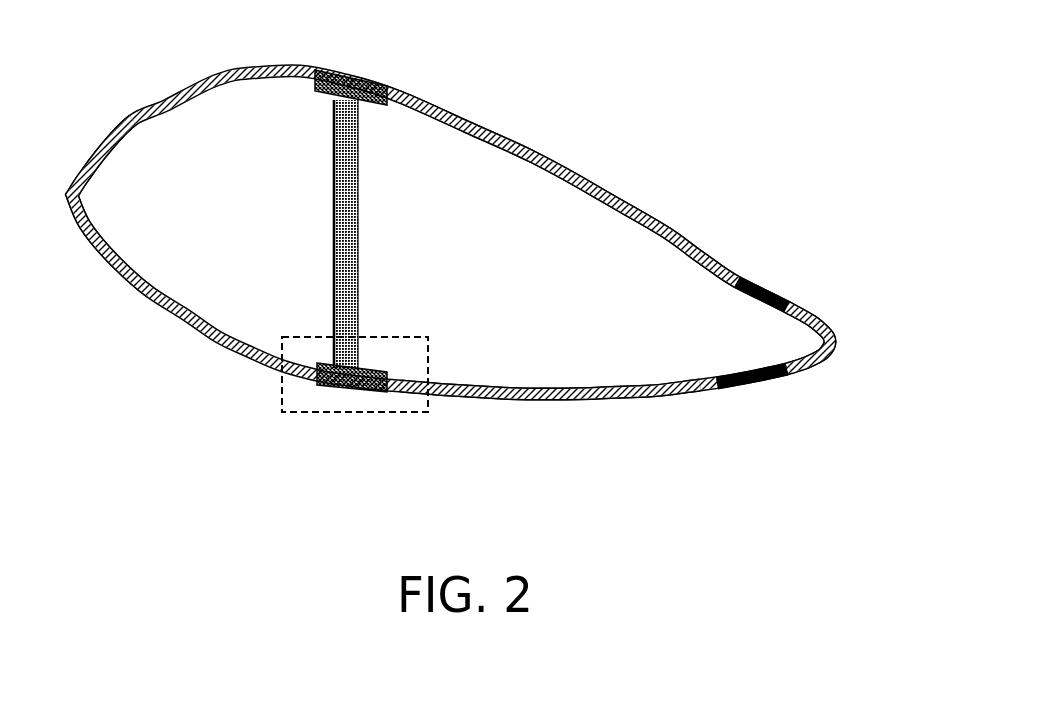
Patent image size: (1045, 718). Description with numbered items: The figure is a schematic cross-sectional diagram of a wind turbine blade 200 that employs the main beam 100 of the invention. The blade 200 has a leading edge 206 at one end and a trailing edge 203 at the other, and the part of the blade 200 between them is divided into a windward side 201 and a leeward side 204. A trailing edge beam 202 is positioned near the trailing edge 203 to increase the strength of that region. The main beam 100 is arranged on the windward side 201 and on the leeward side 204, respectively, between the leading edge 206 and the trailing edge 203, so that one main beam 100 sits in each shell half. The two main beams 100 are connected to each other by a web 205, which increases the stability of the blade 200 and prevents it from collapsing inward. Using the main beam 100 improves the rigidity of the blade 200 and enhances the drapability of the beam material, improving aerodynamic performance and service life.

The main beam 100 is at (368, 78).
The wind turbine blade 200 is at (190, 75).
The windward side 201 is at (568, 163).
The trailing edge beam 202 is at (773, 286).
The trailing edge 203 is at (837, 340).
The leeward side 204 is at (602, 396).
The web 205 is at (350, 192).
The leading edge 206 is at (76, 196).